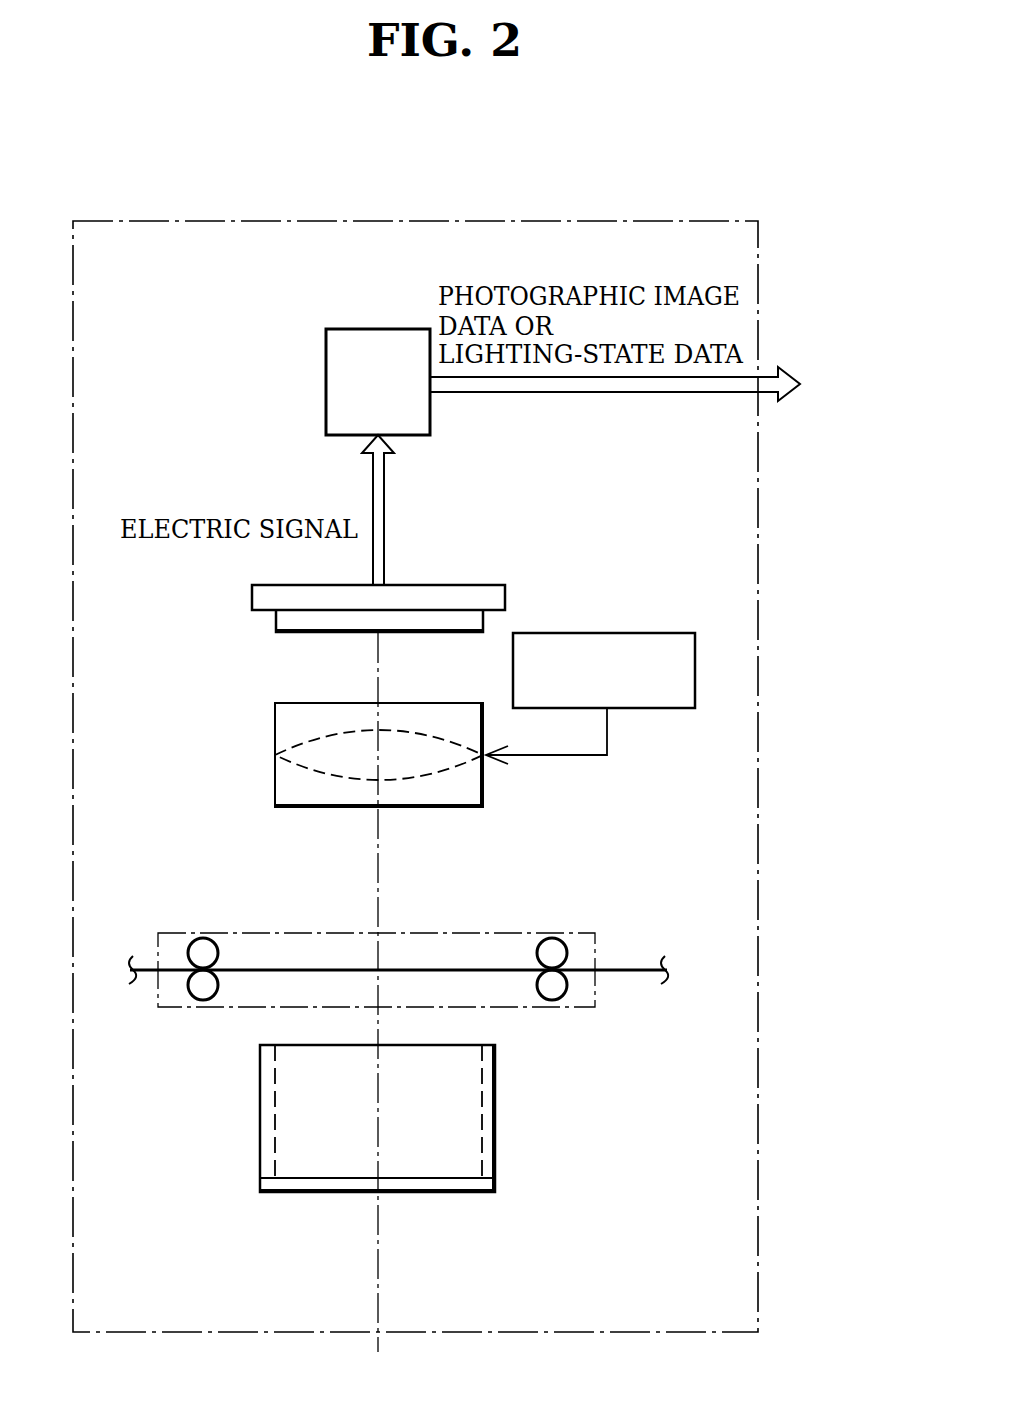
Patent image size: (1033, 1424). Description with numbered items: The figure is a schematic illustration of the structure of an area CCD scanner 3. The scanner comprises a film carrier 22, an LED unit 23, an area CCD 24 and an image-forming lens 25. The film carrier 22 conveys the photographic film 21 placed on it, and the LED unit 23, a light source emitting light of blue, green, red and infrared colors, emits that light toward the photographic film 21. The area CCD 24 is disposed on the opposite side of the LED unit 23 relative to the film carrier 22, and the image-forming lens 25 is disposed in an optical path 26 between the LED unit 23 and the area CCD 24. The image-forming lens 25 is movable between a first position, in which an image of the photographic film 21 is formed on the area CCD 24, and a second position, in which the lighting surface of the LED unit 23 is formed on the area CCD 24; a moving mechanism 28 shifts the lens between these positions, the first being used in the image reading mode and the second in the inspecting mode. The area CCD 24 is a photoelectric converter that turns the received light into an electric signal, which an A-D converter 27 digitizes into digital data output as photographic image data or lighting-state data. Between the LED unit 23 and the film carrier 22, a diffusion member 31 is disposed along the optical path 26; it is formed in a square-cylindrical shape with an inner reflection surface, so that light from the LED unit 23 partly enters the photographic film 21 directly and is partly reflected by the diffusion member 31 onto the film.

The area CCD scanner 3 is at (443, 202).
The photographic film 21 is at (629, 974).
The film carrier 22 is at (535, 910).
The LED unit 23 is at (444, 1214).
The area CCD 24 is at (456, 585).
The image-forming lens 25 is at (275, 778).
The optical path 26 is at (378, 663).
The A-D converter 27 is at (378, 329).
The moving mechanism 28 is at (605, 633).
The diffusion member 31 is at (518, 1098).